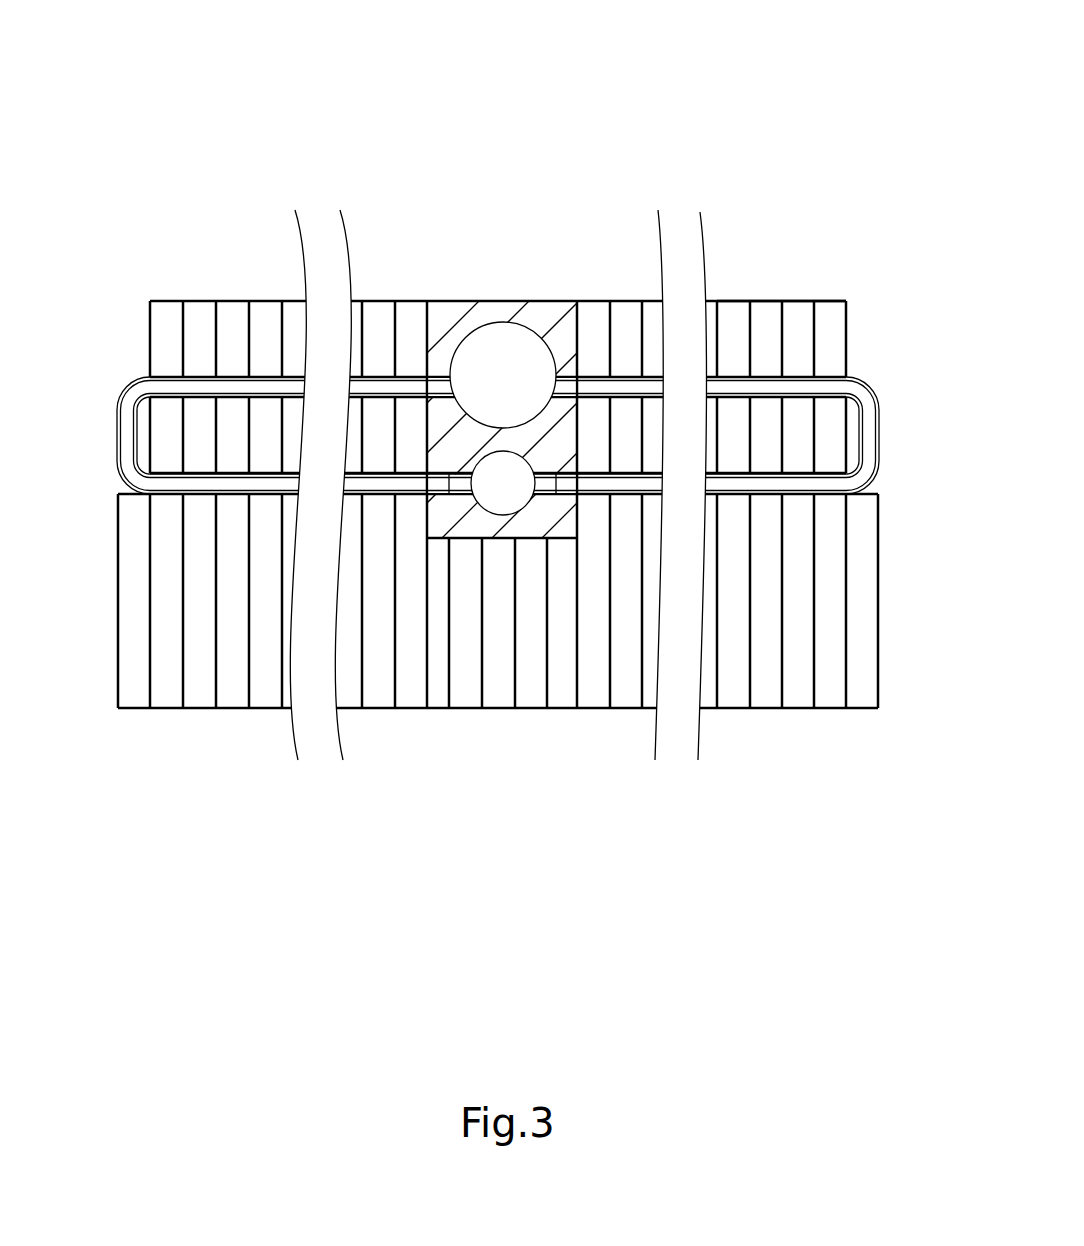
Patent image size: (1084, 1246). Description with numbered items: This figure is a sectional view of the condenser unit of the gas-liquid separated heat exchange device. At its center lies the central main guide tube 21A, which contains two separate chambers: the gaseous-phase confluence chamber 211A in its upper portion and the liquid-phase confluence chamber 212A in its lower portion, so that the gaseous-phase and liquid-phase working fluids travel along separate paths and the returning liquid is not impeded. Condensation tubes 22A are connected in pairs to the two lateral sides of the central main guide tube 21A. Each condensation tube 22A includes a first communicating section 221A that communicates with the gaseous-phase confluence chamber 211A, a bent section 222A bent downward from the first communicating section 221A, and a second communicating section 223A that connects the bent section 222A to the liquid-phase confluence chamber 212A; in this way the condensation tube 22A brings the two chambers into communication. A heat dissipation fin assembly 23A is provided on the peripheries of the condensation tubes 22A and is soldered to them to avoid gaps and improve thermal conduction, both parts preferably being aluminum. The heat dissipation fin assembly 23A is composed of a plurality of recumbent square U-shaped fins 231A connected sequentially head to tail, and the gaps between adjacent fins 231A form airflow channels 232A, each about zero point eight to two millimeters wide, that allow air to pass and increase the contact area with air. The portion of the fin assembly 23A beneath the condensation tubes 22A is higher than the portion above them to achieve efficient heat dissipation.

The central main guide tube 21A is at (450, 310).
The gaseous-phase confluence chamber 211A is at (476, 374).
The liquid-phase confluence chamber 212A is at (503, 483).
The condensation tube 22A is at (498, 488).
The first communicating section 221A is at (267, 388).
The bent section 222A is at (129, 437).
The second communicating section 223A is at (205, 482).
The heat dissipation fin assembly 23A is at (827, 357).
The recumbent square U-shaped fin 231A is at (765, 301).
The airflow channel 232A is at (728, 333).